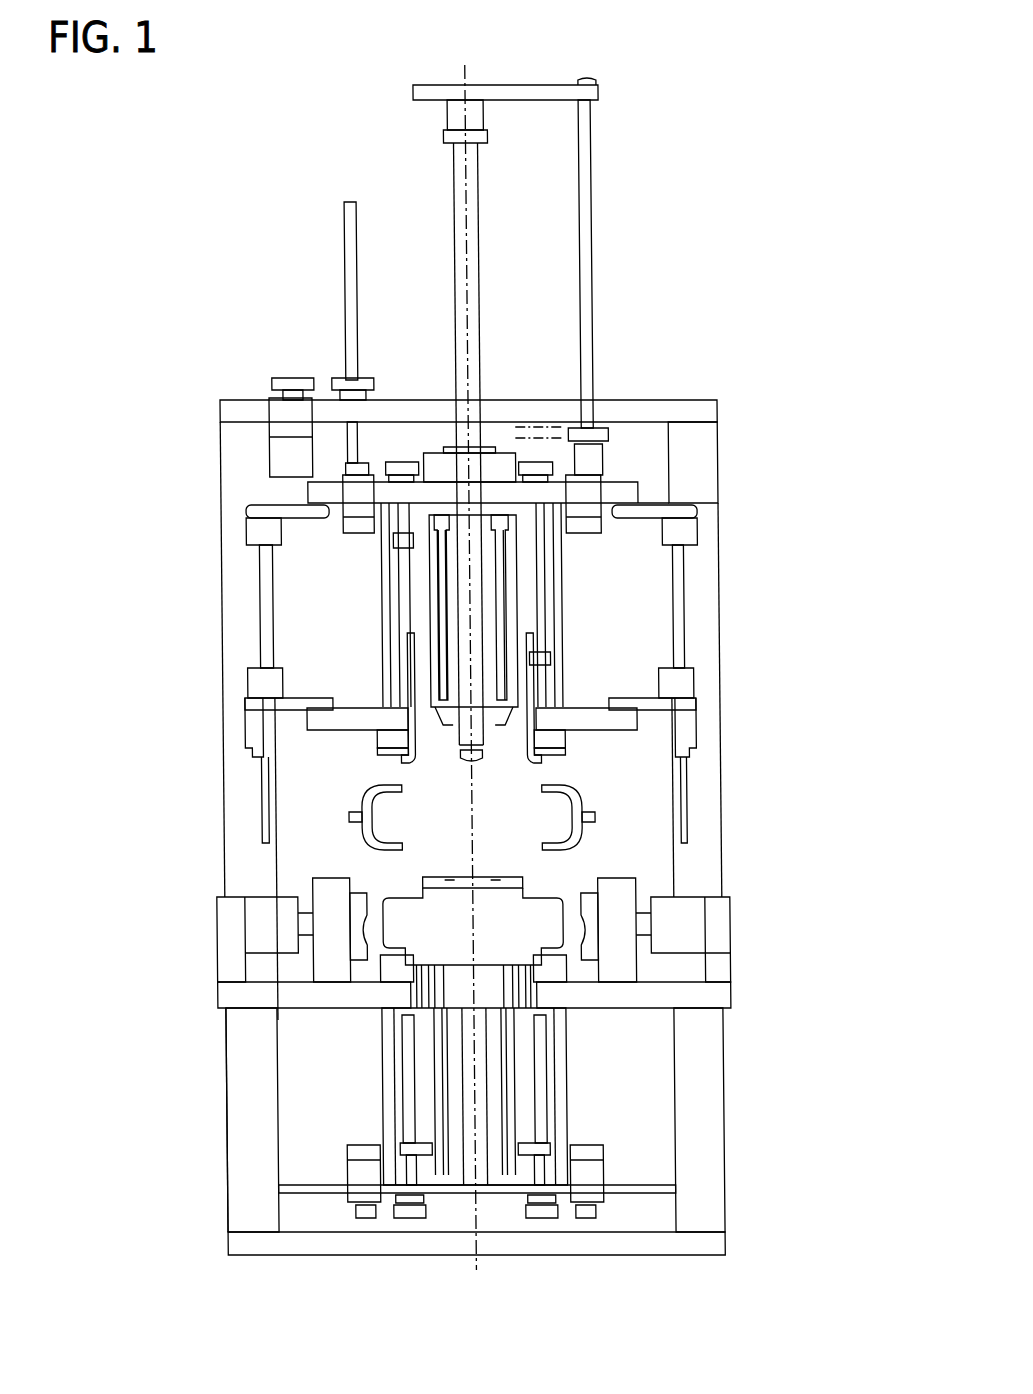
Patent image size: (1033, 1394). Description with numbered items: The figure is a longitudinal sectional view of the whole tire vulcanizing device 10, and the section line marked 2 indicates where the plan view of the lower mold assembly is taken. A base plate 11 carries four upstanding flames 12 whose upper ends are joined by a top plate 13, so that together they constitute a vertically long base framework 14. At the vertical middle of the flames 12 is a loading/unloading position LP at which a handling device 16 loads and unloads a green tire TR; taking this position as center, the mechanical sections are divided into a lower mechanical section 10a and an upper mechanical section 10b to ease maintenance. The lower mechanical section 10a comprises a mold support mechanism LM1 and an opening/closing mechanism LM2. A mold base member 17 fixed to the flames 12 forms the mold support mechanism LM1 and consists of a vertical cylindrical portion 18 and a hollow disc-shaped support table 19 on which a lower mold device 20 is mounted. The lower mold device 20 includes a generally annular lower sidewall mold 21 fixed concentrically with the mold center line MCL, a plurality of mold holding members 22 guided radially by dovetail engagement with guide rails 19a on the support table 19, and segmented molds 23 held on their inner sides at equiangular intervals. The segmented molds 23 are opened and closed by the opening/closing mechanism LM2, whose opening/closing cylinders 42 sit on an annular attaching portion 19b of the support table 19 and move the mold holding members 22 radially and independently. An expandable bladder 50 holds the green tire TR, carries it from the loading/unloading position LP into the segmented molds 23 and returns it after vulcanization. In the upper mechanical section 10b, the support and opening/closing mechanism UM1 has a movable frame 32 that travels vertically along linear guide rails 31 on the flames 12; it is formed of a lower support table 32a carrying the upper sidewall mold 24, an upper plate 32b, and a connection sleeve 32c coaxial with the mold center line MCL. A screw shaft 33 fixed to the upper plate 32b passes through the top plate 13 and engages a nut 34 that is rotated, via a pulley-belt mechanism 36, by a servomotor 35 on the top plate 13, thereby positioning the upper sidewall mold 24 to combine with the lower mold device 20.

The tire vulcanizing device 10 is at (697, 352).
The lower mechanical section 10a is at (648, 1082).
The upper mechanical section 10b is at (696, 606).
The base plate 11 is at (620, 1245).
The flames 12 is at (236, 773).
The top plate 13 is at (630, 405).
The base framework 14 is at (727, 490).
The handling device 16 is at (357, 812).
The mold base member 17 is at (311, 1195).
The cylindrical portion 18 is at (556, 1098).
The support table 19 is at (632, 990).
The guide rails 19a is at (296, 972).
The annular attaching portion 19b is at (713, 940).
The lower mold device 20 is at (362, 965).
The lower sidewall mold 21 is at (572, 985).
The mold holding members 22 is at (306, 885).
The segmented molds 23 is at (353, 922).
The upper sidewall mold 24 is at (374, 752).
The linear guide rails 31 is at (260, 588).
The movable frame 32 is at (708, 678).
The support table 32a is at (356, 712).
The upper plate 32b is at (312, 492).
The connection sleeve 32c is at (561, 616).
The screw shaft 33 is at (348, 275).
The nut 34 is at (364, 383).
The servomotor 35 is at (270, 410).
The pulley-belt mechanism 36 is at (332, 372).
The opening/closing cylinders 42 is at (252, 919).
The bladder 50 is at (396, 898).
The support and opening/closing mechanism for the upper sidewall mold UM1 is at (632, 583).
The mold support mechanism LM1 is at (355, 1090).
The opening/closing mechanism for segmented molds LM2 is at (702, 865).
The loading/unloading position LP is at (338, 835).
The green tire TR is at (568, 805).
The mold center line MCL is at (459, 692).
The section line of FIG. 2 is at (98, 865).